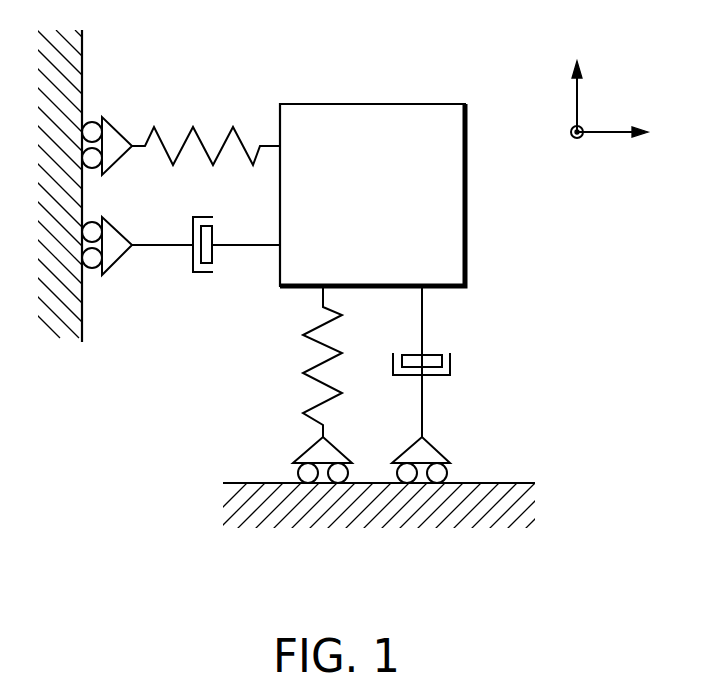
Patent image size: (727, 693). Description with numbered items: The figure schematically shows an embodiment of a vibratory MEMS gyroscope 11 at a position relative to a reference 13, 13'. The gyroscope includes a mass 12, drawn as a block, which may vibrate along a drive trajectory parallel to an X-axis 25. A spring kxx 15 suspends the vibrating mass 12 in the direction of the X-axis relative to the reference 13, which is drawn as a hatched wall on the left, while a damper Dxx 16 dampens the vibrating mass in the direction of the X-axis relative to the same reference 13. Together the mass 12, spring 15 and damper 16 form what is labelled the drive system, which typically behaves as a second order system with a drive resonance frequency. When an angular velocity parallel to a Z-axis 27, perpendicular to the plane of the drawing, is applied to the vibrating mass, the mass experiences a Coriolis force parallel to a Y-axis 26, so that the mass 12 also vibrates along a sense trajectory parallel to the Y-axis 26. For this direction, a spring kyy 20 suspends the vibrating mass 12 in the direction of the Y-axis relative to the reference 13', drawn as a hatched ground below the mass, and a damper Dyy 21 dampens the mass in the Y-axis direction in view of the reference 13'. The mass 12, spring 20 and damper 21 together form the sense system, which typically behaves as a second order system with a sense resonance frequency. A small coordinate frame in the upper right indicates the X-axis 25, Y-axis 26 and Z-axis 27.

The vibratory MEMS gyroscope 11 is at (197, 597).
The mass 12 is at (352, 104).
The reference 13 is at (77, 186).
The reference 13' is at (392, 477).
The spring kxx 15 is at (233, 127).
The damper Dxx 16 is at (148, 248).
The spring kyy 20 is at (303, 413).
The damper Dyy 21 is at (424, 318).
The X-axis 25 is at (620, 130).
The Y-axis 26 is at (575, 86).
The Z-axis 27 is at (581, 140).